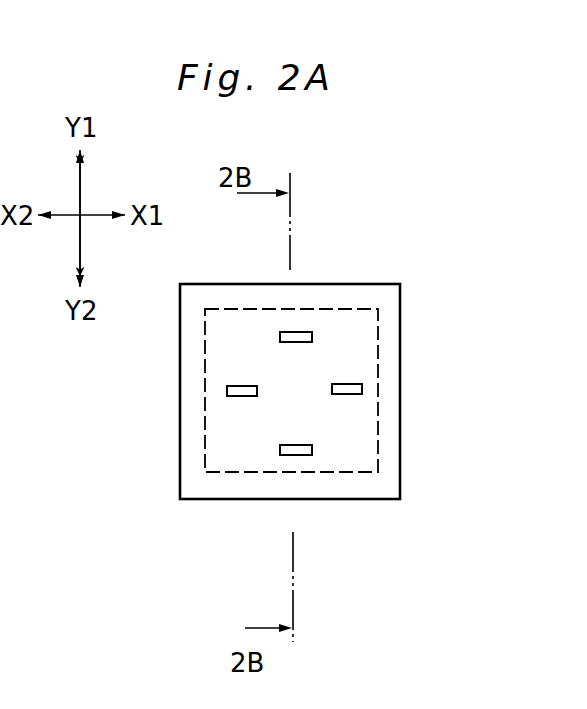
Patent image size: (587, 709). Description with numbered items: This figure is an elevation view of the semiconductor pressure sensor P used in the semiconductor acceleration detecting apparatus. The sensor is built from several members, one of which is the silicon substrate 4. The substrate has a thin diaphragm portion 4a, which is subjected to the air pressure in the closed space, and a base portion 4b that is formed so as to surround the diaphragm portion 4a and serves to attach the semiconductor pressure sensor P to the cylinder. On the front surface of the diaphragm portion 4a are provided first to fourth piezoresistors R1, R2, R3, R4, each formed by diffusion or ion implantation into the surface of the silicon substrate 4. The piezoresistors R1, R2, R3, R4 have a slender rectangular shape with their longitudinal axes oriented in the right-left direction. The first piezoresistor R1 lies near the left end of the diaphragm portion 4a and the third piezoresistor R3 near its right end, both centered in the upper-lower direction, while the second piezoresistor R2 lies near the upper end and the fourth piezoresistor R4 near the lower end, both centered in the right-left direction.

The silicon substrate 4 is at (383, 258).
The diaphragm portion 4a is at (250, 358).
The base portion 4b is at (225, 488).
The semiconductor pressure sensor P is at (432, 290).
The first piezoresistor R1 is at (240, 398).
The second piezoresistor R2 is at (300, 332).
The third piezoresistor R3 is at (362, 389).
The fourth piezoresistor R4 is at (302, 452).